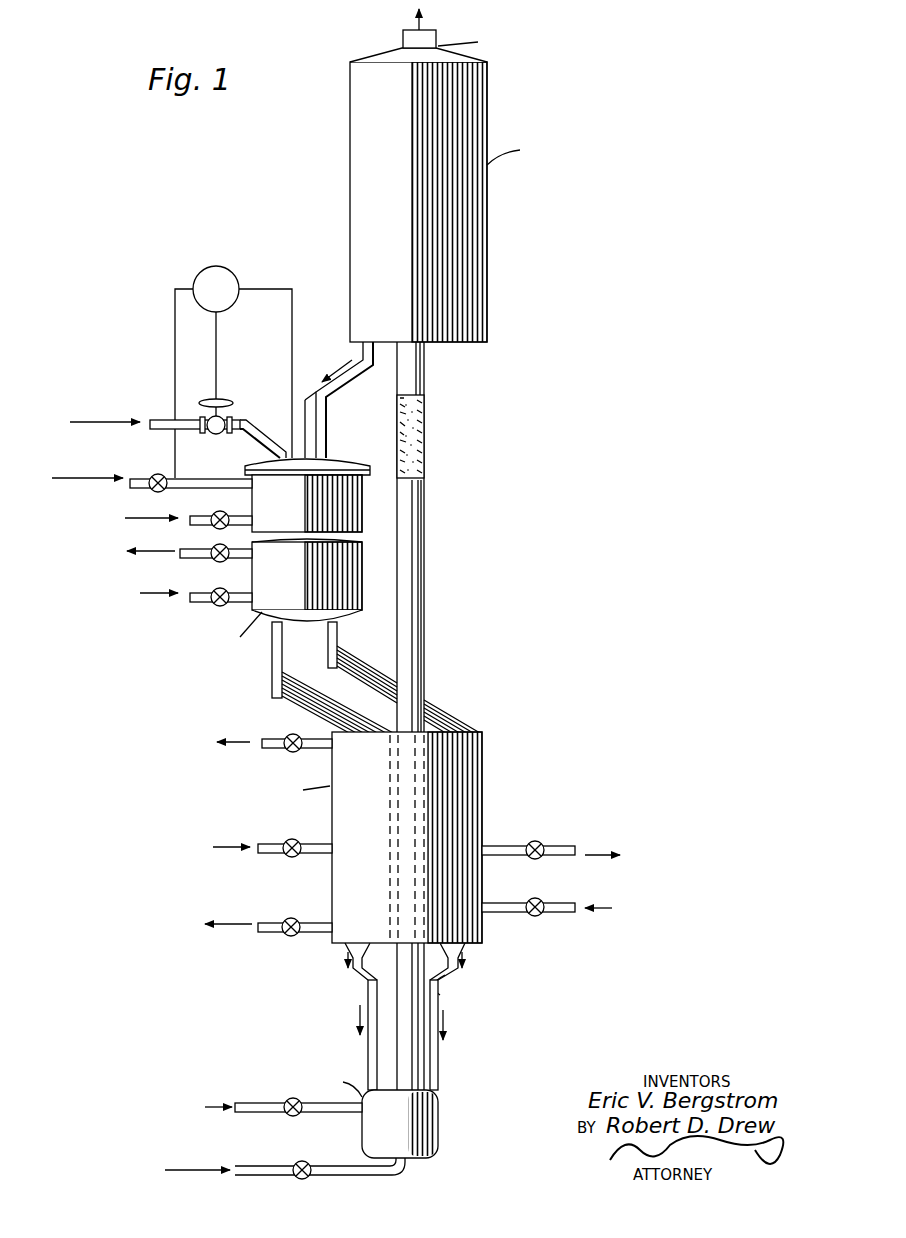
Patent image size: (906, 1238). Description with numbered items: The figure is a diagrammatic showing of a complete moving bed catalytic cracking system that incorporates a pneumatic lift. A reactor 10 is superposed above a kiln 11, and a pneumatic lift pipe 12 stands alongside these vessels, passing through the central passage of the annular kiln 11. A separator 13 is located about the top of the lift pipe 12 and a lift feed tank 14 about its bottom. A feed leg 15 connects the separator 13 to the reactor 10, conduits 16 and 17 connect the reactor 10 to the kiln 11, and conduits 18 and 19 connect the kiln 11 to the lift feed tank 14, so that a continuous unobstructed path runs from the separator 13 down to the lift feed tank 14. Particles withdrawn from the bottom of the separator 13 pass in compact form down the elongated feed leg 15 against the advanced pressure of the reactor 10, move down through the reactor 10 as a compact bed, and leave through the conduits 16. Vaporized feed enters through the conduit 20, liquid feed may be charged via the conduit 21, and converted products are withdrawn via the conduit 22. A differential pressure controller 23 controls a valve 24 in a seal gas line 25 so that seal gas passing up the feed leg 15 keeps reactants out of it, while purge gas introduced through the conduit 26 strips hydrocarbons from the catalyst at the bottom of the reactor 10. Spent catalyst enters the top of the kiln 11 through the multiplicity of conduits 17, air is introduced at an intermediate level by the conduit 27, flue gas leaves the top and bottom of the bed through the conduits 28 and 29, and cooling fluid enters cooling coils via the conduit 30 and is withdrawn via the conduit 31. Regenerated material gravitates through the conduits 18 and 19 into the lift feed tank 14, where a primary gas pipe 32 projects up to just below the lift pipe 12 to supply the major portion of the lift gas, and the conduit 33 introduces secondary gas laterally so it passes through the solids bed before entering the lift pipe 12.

The reactor 10 is at (352, 514).
The kiln 11 is at (483, 786).
The pneumatic lift pipe 12 is at (414, 612).
The separator 13 is at (350, 150).
The lift feed tank 14 is at (321, 1113).
The feed leg 15 is at (318, 414).
The conduits 16 is at (272, 652).
The conduits 17 is at (366, 665).
The conduits 18 is at (358, 975).
The conduits 19 is at (368, 1050).
The conduit 20 is at (220, 472).
The conduit 21 is at (198, 516).
The conduit 22 is at (188, 558).
The differential pressure controller 23 is at (221, 266).
The valve 24 is at (222, 398).
The seal gas line 25 is at (250, 430).
The conduit 26 is at (203, 604).
The conduit 27 is at (280, 832).
The conduit 28 is at (270, 738).
The conduit 29 is at (268, 932).
The conduit 30 is at (556, 903).
The conduit 31 is at (556, 846).
The primary gas pipe 32 is at (406, 1172).
The conduit 33 is at (270, 1112).